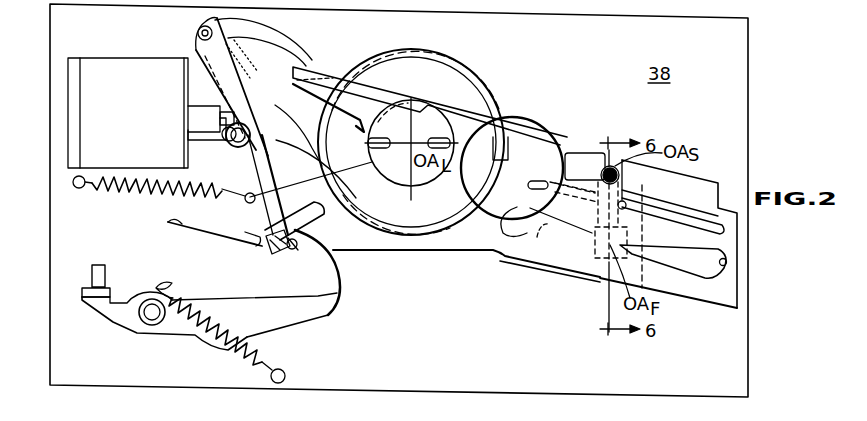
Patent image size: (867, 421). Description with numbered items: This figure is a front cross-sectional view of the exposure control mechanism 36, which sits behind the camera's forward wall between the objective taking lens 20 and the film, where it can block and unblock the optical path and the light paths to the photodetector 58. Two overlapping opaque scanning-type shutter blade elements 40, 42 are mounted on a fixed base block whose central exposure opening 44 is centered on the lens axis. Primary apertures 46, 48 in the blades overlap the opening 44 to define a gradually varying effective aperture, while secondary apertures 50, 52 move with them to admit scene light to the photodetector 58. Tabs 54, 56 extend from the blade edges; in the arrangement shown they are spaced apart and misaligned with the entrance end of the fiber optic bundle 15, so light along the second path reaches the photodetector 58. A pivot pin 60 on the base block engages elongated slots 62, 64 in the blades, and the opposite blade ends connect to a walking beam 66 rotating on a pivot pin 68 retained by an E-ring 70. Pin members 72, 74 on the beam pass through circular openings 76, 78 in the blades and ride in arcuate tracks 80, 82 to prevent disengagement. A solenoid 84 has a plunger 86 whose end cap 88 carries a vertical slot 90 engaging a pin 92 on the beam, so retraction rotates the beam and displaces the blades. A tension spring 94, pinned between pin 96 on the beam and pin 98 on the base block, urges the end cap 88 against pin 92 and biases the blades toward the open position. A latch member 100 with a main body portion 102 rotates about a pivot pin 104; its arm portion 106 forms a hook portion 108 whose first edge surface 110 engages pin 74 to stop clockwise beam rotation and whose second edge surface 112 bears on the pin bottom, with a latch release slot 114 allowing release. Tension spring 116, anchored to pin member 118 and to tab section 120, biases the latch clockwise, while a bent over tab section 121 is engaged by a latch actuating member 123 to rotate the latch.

The fiber optic bundle 15 is at (609, 150).
The objective taking lens 20 is at (486, 87).
The exposure control mechanism 36 is at (470, 62).
The shutter blade element 40 is at (318, 64).
The shutter blade element 42 is at (690, 303).
The exposure opening 44 is at (398, 118).
The primary aperture 46 is at (288, 95).
The primary aperture 48 is at (606, 165).
The secondary aperture 50 is at (548, 220).
The secondary aperture 52 is at (735, 265).
The tab 54 is at (530, 122).
The tab 56 is at (700, 180).
The photodetector 58 is at (634, 246).
The pivot pin 60 is at (626, 203).
The elongated slot 62 is at (580, 177).
The elongated slot 64 is at (656, 212).
The walking beam 66 is at (246, 205).
The pivot pin 68 is at (272, 148).
The E-ring 70 is at (252, 137).
The pin member 72 is at (198, 44).
The pin member 74 is at (326, 244).
The circular opening 76 is at (198, 32).
The circular opening 78 is at (310, 228).
The arcuate track 80 is at (280, 36).
The arcuate slot 82 is at (195, 240).
The solenoid 84 is at (68, 97).
The plunger unit 86 is at (188, 137).
The end cap 88 is at (238, 118).
The vertical slot 90 is at (212, 104).
The pin 92 is at (219, 146).
The tension spring 94 is at (128, 190).
The pin 96 is at (310, 185).
The pin 98 is at (80, 188).
The latch member 100 is at (328, 315).
The main body portion 102 is at (290, 325).
The pivot pin 104 is at (153, 326).
The arm portion 106 is at (338, 279).
The hook portion 108 is at (241, 234).
The first edge surface 110 is at (268, 254).
The second edge surface 112 is at (290, 250).
The latch release slot 114 is at (316, 293).
The tension spring 116 is at (256, 362).
The pin member 118 is at (286, 376).
The tab section 120 is at (161, 286).
The bent over tab section 121 is at (108, 290).
The latch actuating member 123 is at (92, 265).